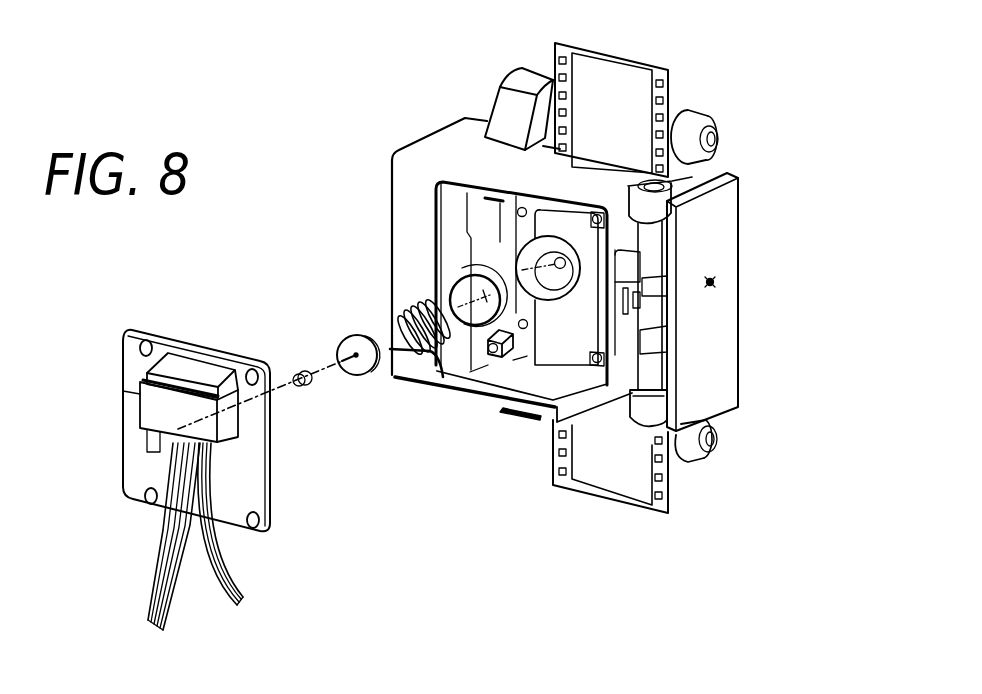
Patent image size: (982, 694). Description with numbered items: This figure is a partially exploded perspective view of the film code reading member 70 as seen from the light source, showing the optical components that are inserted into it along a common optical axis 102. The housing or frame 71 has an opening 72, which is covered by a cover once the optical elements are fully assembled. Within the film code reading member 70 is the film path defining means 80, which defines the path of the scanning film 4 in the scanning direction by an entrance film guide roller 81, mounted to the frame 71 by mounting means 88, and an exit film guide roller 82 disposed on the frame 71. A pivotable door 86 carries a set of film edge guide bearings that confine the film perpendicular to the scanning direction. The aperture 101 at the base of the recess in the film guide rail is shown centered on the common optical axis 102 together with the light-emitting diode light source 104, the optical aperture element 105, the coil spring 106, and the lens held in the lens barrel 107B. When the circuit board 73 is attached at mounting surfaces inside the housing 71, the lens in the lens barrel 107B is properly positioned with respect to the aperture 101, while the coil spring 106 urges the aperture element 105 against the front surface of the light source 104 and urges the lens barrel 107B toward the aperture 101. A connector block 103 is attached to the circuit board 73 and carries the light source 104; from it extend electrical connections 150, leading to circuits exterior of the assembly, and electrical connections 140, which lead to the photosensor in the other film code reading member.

The scanning film 4 is at (633, 60).
The film code reading member 70 is at (433, 106).
The frame 71 is at (392, 152).
The opening 72 is at (433, 208).
The circuit board 73 is at (270, 502).
The film path defining means 80 is at (728, 155).
The entrance film guide roller 81 is at (727, 84).
The exit film guide roller 82 is at (700, 452).
The pivotable door 86 is at (747, 222).
The mounting means 88 is at (496, 96).
The aperture 101 is at (561, 270).
The common optical axis 102 is at (318, 362).
The connector block 103 is at (233, 424).
The light-emitting diode light source 104 is at (307, 390).
The optical aperture element 105 is at (373, 372).
The coil spring 106 is at (410, 309).
The lens barrel 107B is at (470, 266).
The electrical connections 140 is at (226, 581).
The electrical connections 150 is at (172, 603).